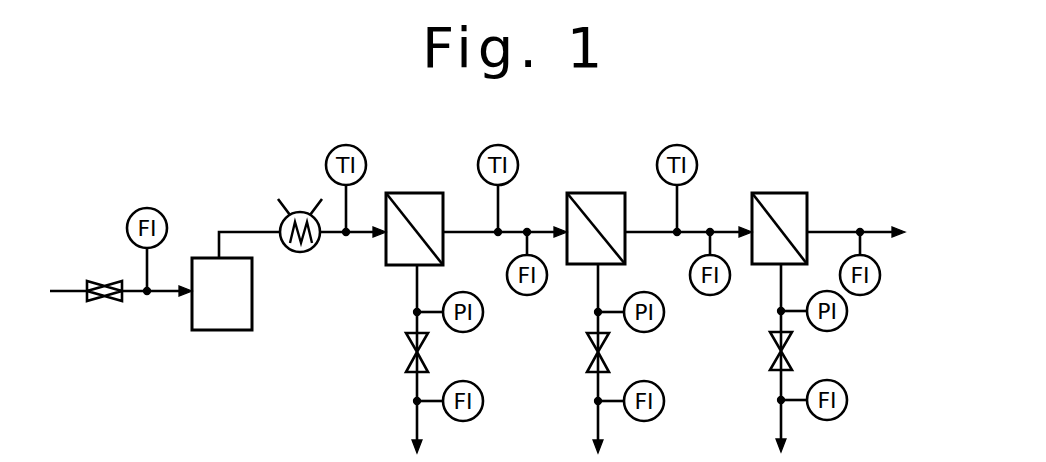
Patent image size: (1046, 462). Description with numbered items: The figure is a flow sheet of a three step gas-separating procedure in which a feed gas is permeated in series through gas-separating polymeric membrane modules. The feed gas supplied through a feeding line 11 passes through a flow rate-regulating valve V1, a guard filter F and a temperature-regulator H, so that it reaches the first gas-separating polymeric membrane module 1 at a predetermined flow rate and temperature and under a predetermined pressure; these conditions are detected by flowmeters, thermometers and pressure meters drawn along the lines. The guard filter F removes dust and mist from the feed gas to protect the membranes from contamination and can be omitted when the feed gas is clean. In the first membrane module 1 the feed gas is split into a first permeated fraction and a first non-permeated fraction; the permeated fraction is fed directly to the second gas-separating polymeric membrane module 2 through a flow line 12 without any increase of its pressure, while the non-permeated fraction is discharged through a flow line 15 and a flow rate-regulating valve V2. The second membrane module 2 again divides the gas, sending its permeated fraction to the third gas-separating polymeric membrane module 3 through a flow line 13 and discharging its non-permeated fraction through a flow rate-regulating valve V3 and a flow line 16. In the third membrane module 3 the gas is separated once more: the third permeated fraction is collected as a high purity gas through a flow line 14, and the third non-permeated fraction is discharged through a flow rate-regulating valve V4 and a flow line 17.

The first gas-separating polymeric membrane module 1 is at (419, 193).
The second gas-separating polymeric membrane module 2 is at (600, 193).
The third gas-separating polymeric membrane module 3 is at (778, 193).
The feeding line 11 is at (64, 291).
The flow line 12 is at (462, 232).
The flow line 13 is at (646, 232).
The flow line 14 is at (835, 232).
The flow line 15 is at (417, 425).
The flow line 16 is at (598, 425).
The flow line 17 is at (781, 423).
The flow rate-regulating valve V1 is at (117, 302).
The flow rate-regulating valve V2 is at (428, 357).
The flow rate-regulating valve V3 is at (609, 357).
The flow rate-regulating valve V4 is at (792, 356).
The guard filter F is at (252, 318).
The temperature-regulator H is at (313, 252).